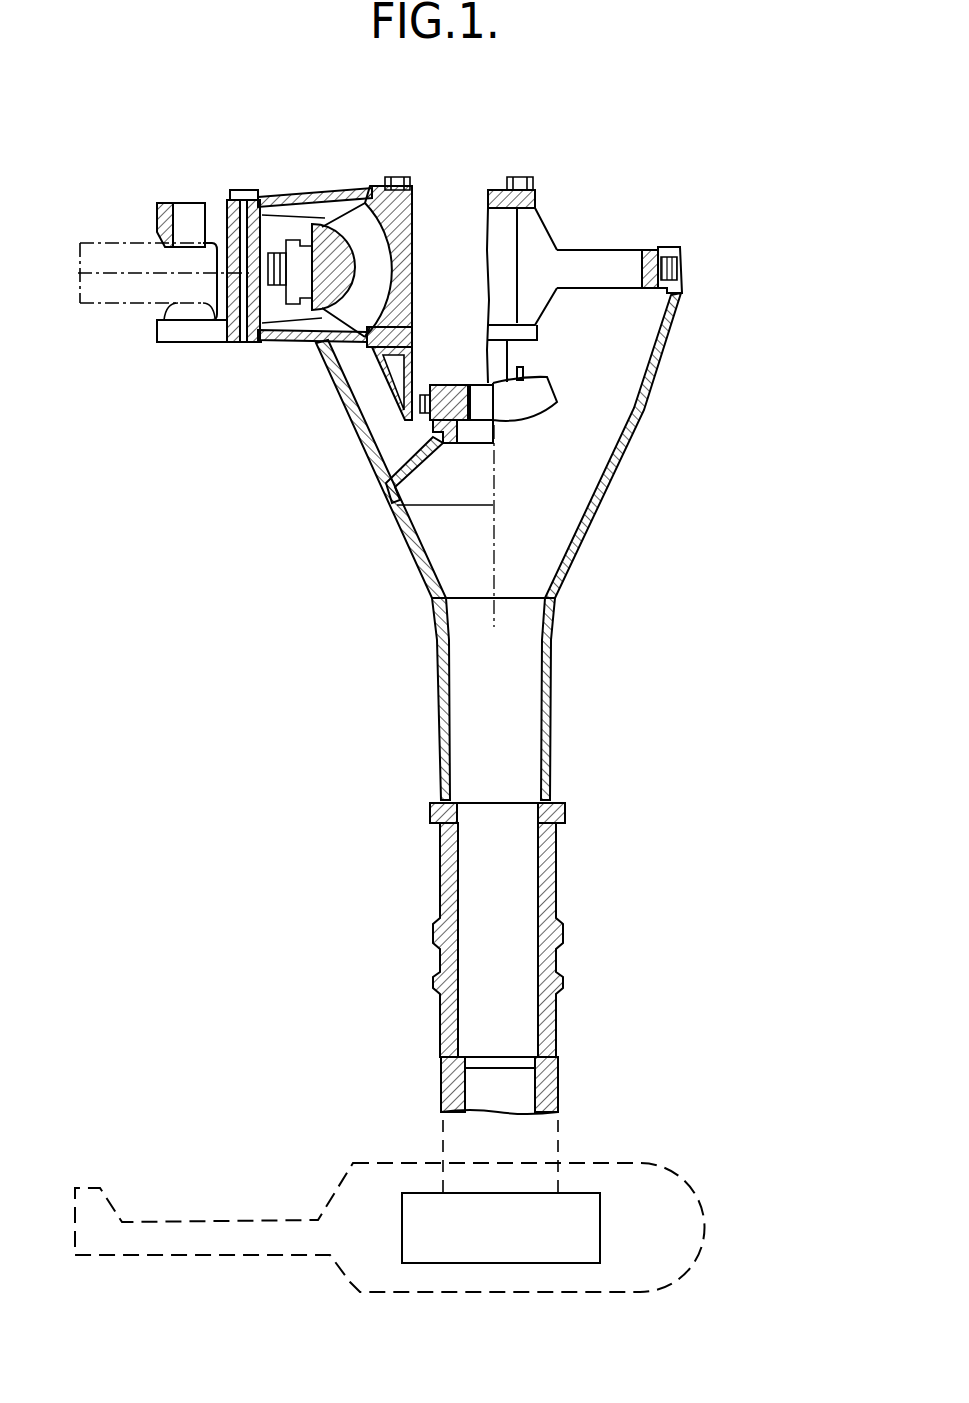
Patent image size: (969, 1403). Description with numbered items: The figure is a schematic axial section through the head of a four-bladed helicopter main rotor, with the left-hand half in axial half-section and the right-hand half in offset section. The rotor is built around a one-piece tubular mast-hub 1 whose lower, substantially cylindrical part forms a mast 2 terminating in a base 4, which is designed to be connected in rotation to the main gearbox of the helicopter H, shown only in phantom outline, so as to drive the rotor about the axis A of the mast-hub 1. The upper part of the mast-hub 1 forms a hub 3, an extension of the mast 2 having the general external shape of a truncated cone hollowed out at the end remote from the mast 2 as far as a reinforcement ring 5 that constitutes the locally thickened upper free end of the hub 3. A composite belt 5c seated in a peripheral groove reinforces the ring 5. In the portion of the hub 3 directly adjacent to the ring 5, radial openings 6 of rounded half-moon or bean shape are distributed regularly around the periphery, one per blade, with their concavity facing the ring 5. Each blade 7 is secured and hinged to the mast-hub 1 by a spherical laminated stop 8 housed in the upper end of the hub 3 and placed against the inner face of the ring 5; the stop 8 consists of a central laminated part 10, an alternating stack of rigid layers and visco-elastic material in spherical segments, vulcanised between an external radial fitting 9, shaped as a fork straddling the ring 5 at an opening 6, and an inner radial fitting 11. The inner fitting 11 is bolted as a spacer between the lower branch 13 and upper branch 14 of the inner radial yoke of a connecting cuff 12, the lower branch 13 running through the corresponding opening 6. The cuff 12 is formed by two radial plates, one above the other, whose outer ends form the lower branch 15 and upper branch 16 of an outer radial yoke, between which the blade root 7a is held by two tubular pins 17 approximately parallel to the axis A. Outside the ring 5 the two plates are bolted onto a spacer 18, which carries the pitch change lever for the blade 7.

The mast-hub 1 is at (413, 615).
The mast 2 is at (560, 810).
The hub 3 is at (627, 462).
The base 4 is at (548, 1092).
The reinforcement ring 5 is at (648, 250).
The composite belt 5c is at (680, 273).
The radial opening 6 is at (323, 352).
The blade 7 is at (103, 287).
The blade root 7a is at (188, 290).
The spherical laminated stop 8 is at (337, 210).
The external radial fitting 9 is at (315, 308).
The central laminated part 10 is at (357, 233).
The inner radial fitting 11 is at (497, 240).
The connecting cuff 12 is at (223, 352).
The lower branch of inner radial yoke 13 is at (367, 348).
The upper branch of inner radial yoke 14 is at (343, 192).
The lower branch of outer radial yoke 15 is at (160, 330).
The upper branch of outer radial yoke 16 is at (224, 203).
The tubular pin 17 is at (188, 213).
The spacer 18 is at (245, 327).
The axis A is at (497, 608).
The helicopter H is at (697, 1190).